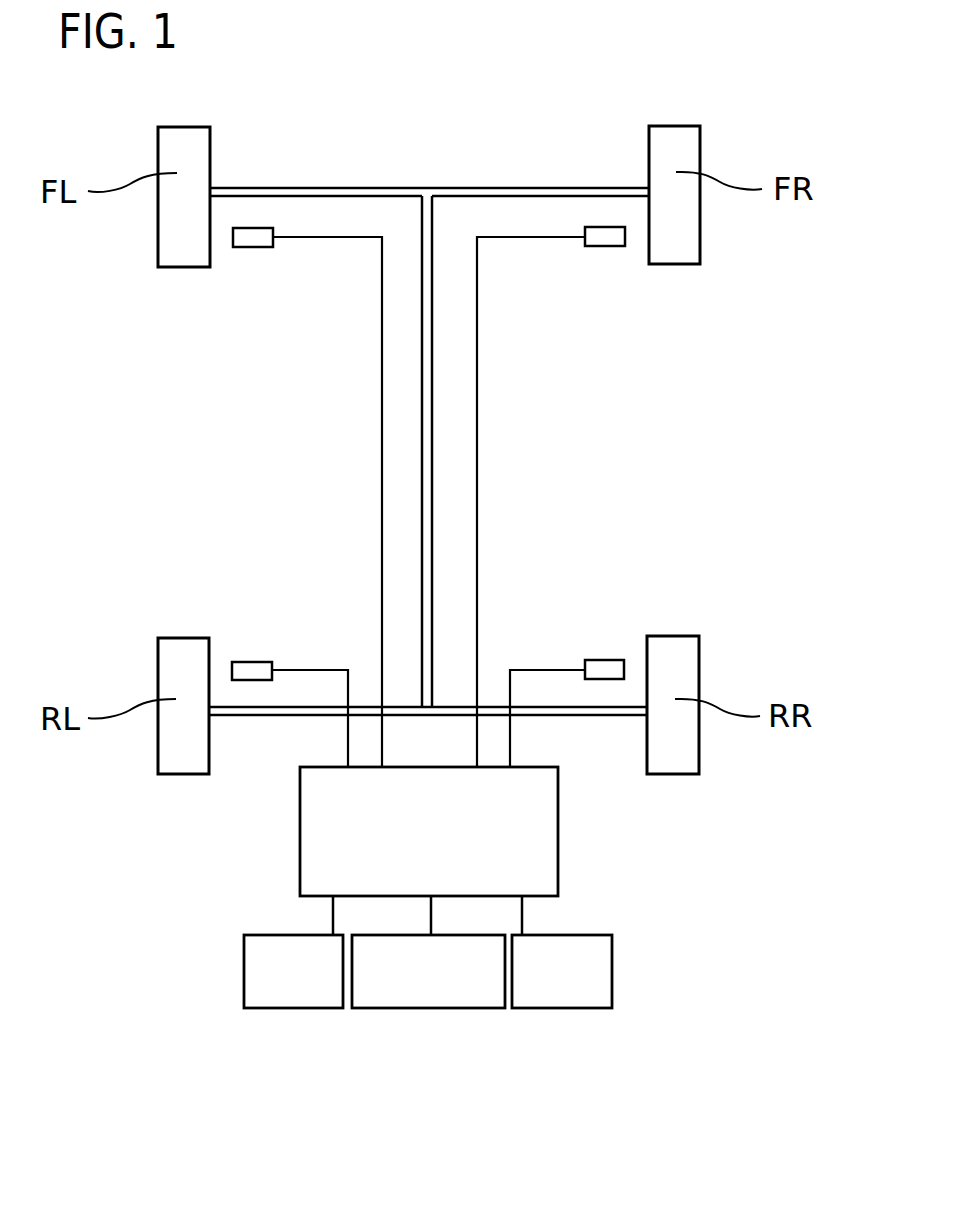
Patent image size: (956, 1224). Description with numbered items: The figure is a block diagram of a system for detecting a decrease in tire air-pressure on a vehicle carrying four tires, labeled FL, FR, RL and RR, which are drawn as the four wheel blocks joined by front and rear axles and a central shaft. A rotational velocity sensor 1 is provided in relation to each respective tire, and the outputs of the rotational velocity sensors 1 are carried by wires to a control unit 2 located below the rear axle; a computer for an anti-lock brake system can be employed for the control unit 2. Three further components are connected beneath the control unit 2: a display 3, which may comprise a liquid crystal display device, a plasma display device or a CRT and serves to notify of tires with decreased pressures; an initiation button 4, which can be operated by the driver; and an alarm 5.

The rotational velocity sensor 1 is at (253, 247).
The control unit 2 is at (540, 849).
The display 3 is at (244, 973).
The initiation button 4 is at (425, 1008).
The alarm 5 is at (612, 992).